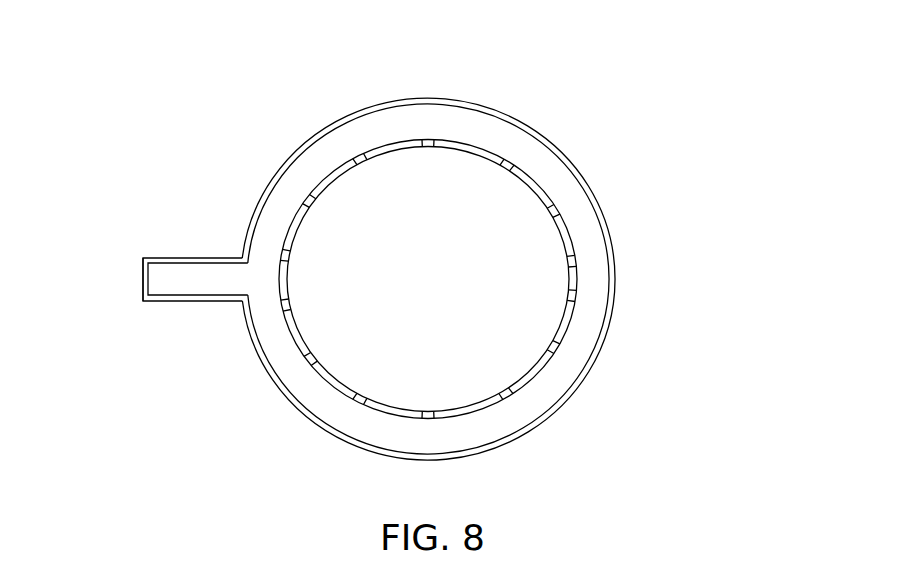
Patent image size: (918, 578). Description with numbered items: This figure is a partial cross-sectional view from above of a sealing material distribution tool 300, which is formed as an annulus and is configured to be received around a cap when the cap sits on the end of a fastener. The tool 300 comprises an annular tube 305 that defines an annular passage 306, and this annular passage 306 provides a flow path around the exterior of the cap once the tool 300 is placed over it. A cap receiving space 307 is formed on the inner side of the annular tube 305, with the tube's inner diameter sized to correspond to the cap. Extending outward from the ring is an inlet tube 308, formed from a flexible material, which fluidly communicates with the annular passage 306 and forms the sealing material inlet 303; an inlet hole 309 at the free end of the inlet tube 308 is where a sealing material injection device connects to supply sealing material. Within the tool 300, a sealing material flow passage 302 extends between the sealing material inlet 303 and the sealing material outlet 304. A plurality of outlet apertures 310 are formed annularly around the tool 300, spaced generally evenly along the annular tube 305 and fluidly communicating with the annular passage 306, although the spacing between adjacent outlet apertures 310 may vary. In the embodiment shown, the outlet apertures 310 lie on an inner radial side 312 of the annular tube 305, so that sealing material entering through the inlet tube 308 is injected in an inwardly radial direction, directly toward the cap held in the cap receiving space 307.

The sealing material distribution tool 300 is at (672, 152).
The sealing material flow passage 302 is at (357, 128).
The sealing material inlet 303 is at (178, 276).
The sealing material outlet 304 is at (505, 153).
The annular tube 305 is at (502, 445).
The annular passage 306 is at (568, 367).
The cap receiving space 307 is at (398, 284).
The inlet tube 308 is at (212, 285).
The inlet hole 309 is at (143, 285).
The outlet apertures 310 is at (554, 207).
The inner radial side 312 is at (338, 380).